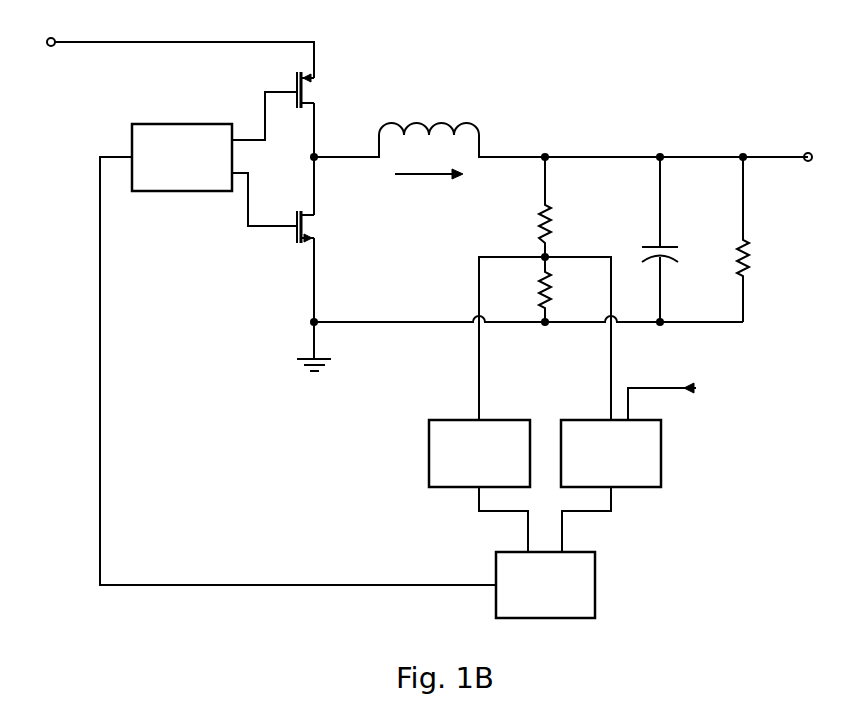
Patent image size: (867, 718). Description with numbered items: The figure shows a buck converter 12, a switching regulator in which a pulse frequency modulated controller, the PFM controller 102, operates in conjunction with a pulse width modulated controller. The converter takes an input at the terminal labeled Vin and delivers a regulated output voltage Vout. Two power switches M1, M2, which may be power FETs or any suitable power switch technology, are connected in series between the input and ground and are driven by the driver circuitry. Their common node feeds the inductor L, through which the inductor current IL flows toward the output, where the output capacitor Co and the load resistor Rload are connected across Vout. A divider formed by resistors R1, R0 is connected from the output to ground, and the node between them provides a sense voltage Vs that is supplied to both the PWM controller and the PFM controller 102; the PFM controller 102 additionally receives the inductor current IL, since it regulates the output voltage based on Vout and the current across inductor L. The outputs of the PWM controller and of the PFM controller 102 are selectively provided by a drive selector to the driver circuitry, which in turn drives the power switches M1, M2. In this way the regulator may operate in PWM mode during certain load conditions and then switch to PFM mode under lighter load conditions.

The buck converter 12 is at (432, 326).
The PFM controller 102 is at (661, 453).
The input voltage terminal Vin is at (38, 44).
The output voltage Vout is at (824, 159).
The power switch M1 is at (289, 106).
The power switch M2 is at (289, 208).
The inductor L is at (429, 128).
The inductor current IL is at (429, 186).
The sense resistor R1 is at (529, 207).
The sense resistor R0 is at (529, 289).
The sense voltage node Vs is at (546, 257).
The output capacitor Co is at (674, 239).
The load resistor Rload is at (766, 239).